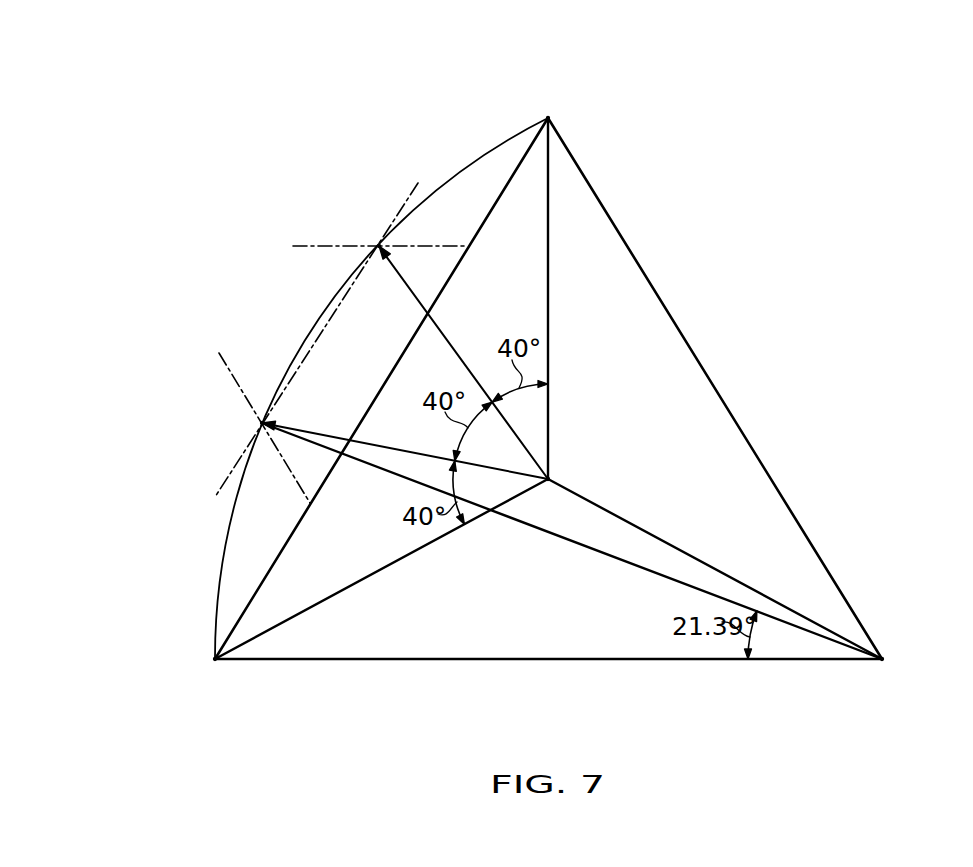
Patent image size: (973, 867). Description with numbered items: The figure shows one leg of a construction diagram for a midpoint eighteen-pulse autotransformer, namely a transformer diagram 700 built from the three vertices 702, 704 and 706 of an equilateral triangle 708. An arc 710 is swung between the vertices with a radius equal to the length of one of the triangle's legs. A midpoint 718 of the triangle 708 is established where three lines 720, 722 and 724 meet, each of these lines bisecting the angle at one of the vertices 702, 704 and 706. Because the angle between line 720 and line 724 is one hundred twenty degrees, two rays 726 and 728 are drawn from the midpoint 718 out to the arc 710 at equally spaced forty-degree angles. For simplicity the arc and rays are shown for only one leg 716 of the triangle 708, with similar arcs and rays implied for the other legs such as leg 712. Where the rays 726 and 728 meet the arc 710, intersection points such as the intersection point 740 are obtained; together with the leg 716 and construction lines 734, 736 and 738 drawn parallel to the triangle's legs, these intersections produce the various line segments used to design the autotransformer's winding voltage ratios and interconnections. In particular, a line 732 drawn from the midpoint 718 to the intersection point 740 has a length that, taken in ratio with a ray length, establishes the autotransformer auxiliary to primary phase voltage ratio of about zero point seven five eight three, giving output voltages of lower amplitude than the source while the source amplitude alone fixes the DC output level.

The transformer diagram 700 is at (774, 219).
The vertex 702 is at (548, 118).
The vertex 704 is at (215, 659).
The vertex 706 is at (882, 659).
The equilateral triangle 708 is at (748, 488).
The arc 710 is at (455, 177).
The leg 712 is at (706, 372).
The leg 716 is at (285, 548).
The midpoint 718 is at (548, 479).
The line 720 is at (548, 322).
The line 722 is at (642, 530).
The line 724 is at (420, 550).
The ray 726 is at (414, 297).
The ray 728 is at (348, 440).
The line 732 is at (650, 570).
The construction line 734 is at (225, 362).
The construction line 736 is at (313, 246).
The construction line 738 is at (218, 491).
The intersection point 740 is at (262, 423).